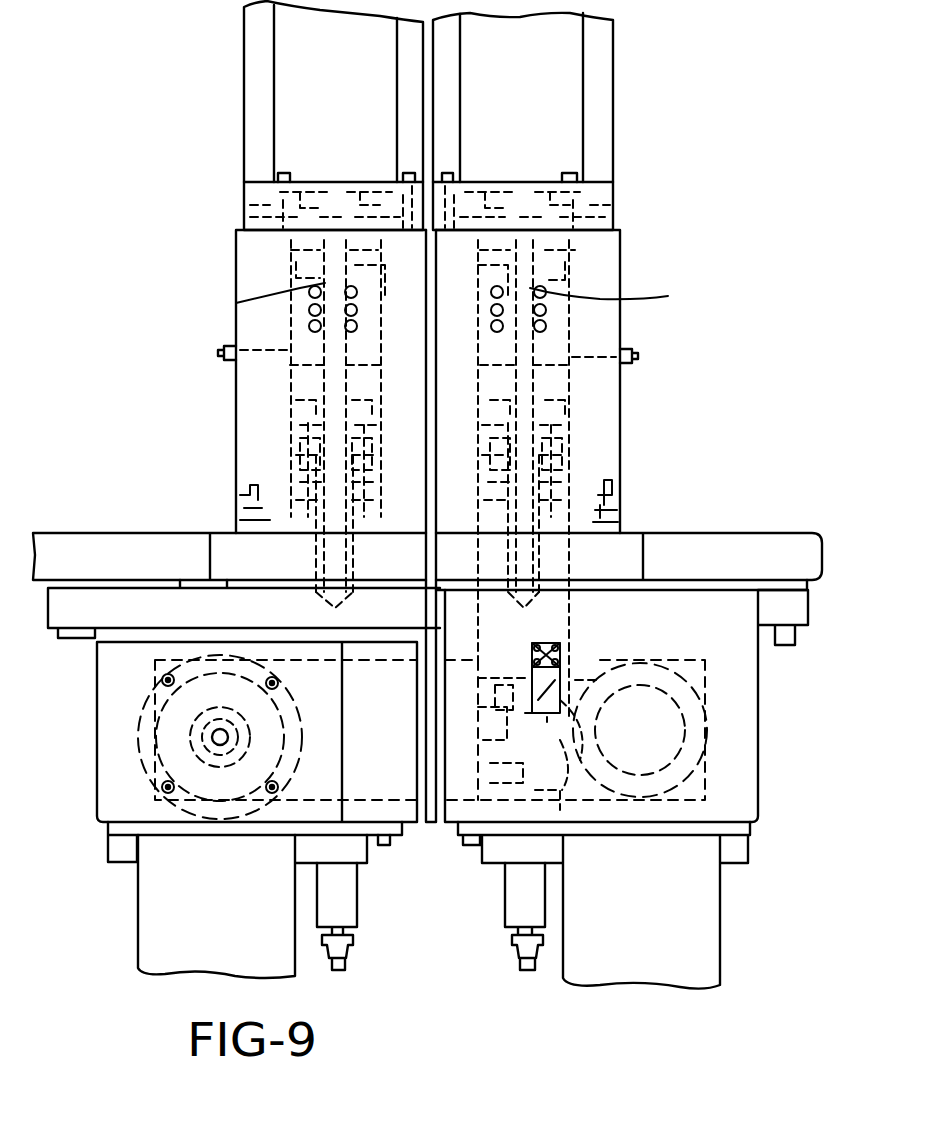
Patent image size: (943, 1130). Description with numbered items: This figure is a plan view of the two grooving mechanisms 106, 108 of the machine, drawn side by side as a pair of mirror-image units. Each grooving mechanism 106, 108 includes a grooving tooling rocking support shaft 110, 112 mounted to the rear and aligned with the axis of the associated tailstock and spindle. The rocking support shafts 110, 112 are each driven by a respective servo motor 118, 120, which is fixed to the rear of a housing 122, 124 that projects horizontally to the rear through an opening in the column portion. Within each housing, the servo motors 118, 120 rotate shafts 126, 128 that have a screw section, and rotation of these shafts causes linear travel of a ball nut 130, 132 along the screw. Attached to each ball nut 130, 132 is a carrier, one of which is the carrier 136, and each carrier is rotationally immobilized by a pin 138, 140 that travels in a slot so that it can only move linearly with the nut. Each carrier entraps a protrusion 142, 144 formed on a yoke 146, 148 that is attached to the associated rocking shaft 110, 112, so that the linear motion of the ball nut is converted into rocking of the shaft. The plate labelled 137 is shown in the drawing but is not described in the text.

The grooving mechanism 106 is at (113, 407).
The grooving mechanism 108 is at (729, 406).
The grooving tooling rocking support shaft 110 is at (190, 754).
The grooving tooling rocking support shaft 112 is at (683, 725).
The servo motor 118 is at (270, 114).
The servo motor 120 is at (584, 118).
The housing 122 is at (232, 377).
The housing 124 is at (620, 386).
The shaft 126 is at (225, 304).
The shaft 128 is at (596, 480).
The ball nut 130 is at (322, 474).
The ball nut 132 is at (548, 467).
The carrier 136 is at (232, 553).
The right mounting plate 137 is at (570, 573).
The pin 138 is at (258, 517).
The pin 140 is at (588, 520).
The protrusion 142 is at (297, 727).
The protrusion 144 is at (555, 698).
The yoke 146 is at (150, 678).
The yoke 148 is at (677, 682).